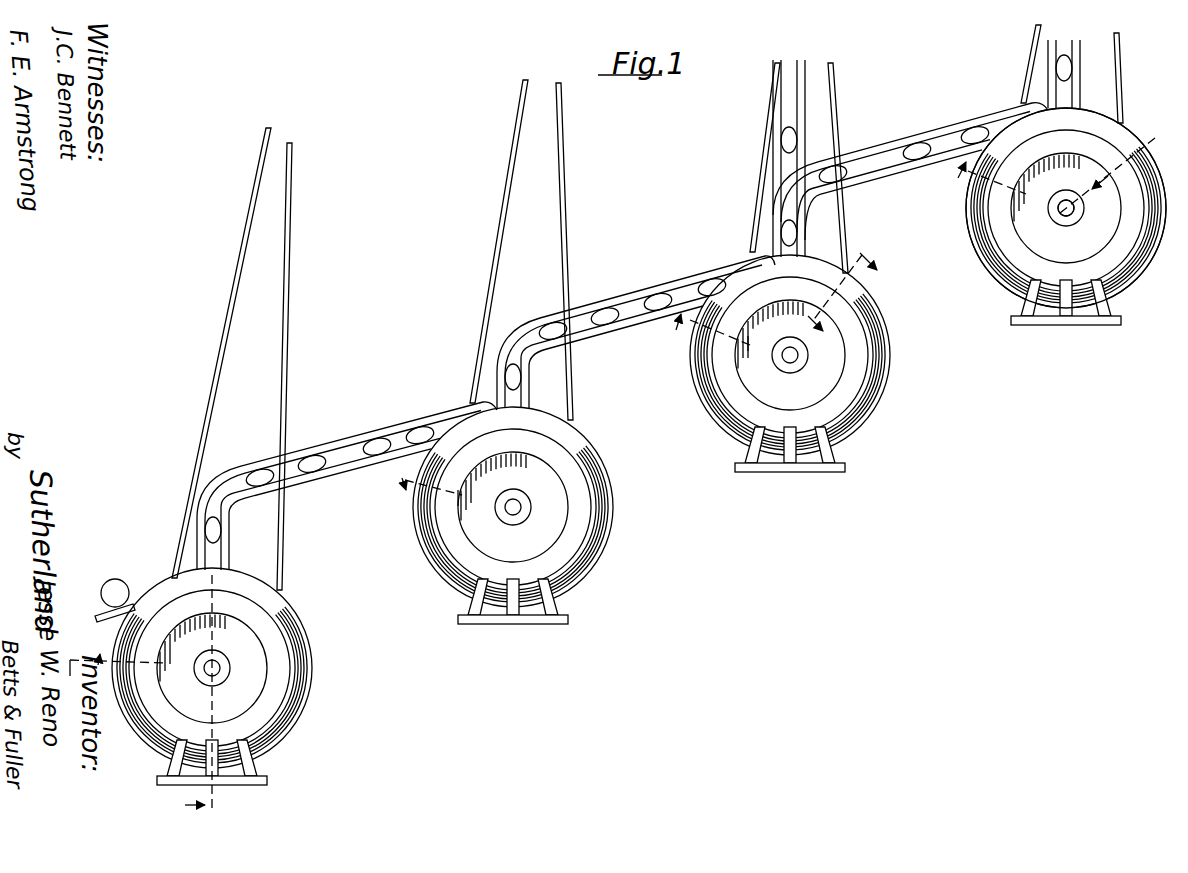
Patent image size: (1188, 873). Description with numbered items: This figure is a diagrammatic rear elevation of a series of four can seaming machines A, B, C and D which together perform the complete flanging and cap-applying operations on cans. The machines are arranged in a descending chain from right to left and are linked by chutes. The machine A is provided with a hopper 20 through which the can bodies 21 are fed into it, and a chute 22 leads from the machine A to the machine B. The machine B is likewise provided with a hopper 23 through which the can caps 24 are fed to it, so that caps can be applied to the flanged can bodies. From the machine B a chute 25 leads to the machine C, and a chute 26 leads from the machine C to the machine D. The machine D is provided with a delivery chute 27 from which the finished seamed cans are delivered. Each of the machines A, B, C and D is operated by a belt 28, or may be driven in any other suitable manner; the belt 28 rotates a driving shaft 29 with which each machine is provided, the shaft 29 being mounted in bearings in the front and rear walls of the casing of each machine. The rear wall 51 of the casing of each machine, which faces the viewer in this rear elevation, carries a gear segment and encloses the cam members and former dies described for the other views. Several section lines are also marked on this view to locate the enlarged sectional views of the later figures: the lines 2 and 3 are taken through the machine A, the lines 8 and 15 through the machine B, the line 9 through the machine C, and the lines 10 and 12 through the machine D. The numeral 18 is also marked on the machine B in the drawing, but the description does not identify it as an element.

The machine A is at (1066, 216).
The machine B is at (853, 352).
The machine C is at (580, 513).
The machine D is at (280, 640).
The section line 2— 2 is at (1116, 170).
The section line 3— 3 is at (988, 182).
The section line 8— 8 is at (702, 328).
The section line 9— 9 is at (429, 484).
The section line 10— 10 is at (133, 657).
The section line 12— 12 is at (207, 693).
The section line 15— 15 is at (849, 291).
The section mark on drum B 18 is at (760, 348).
The hopper 20 is at (1080, 75).
The can bodies 21 is at (1066, 58).
The chute 22 is at (897, 145).
The hopper 23 is at (773, 97).
The can caps 24 is at (792, 134).
The chute 25 is at (633, 293).
The chute 26 is at (366, 433).
The delivery chute 27 is at (104, 608).
The belt 28 is at (1030, 55).
The driving shaft 29 is at (1062, 216).
The rear wall 51 is at (1000, 262).